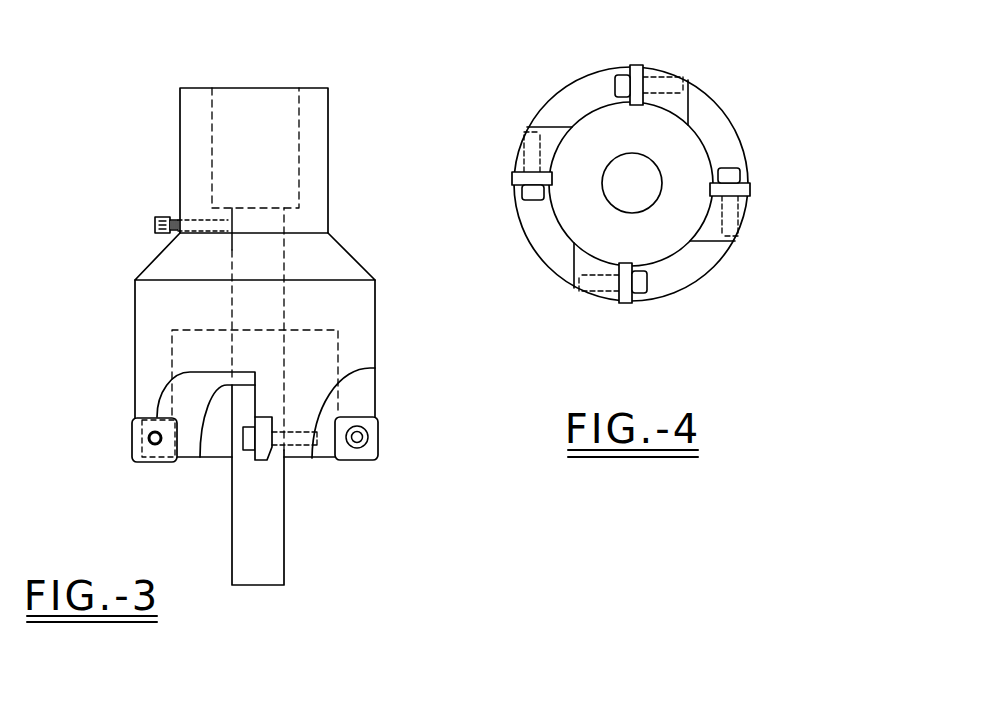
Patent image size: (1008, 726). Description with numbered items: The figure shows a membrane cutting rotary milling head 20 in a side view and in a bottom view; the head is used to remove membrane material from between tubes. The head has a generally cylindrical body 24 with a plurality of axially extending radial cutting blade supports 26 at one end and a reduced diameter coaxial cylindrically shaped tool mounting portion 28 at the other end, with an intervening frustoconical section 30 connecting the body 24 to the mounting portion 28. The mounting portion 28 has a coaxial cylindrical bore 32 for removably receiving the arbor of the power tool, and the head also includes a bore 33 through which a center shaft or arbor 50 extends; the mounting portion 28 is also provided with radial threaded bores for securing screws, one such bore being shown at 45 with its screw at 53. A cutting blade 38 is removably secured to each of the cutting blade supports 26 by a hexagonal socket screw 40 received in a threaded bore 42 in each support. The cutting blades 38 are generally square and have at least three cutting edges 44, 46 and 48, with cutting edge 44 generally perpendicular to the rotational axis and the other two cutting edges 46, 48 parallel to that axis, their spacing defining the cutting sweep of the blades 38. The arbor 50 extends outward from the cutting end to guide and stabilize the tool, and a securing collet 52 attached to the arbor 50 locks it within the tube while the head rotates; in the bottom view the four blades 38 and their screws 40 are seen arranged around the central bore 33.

In FIG. 3, the membrane cutting rotary milling head 20 is at (176, 103).
In FIG. 4, the membrane cutting rotary milling head 20 is at (558, 85).
In FIG. 3, the cylindrical body 24 is at (135, 330).
In FIG. 4, the cylindrical body 24 is at (631, 184).
In FIG. 3, the cutting blade supports 26 is at (370, 397).
In FIG. 4, the cutting blade supports 26 is at (658, 68).
In FIG. 3, the tool mounting portion 28 is at (179, 137).
In FIG. 3, the frustoconical section 30 is at (353, 262).
In FIG. 3, the cylindrical bore 32 is at (213, 108).
In FIG. 3, the bore 33 is at (281, 233).
In FIG. 4, the bore 33 is at (628, 206).
In FIG. 3, the cutting blade 38 is at (133, 423).
In FIG. 4, the cutting blade 38 is at (634, 64).
In FIG. 3, the hexagonal socket screw 40 is at (150, 437).
In FIG. 4, the hexagonal socket screw 40 is at (530, 197).
In FIG. 3, the threaded bore 42 is at (302, 462).
In FIG. 4, the threaded bore 42 is at (672, 70).
In FIG. 3, the cutting edge 44 is at (147, 465).
In FIG. 3, the threaded set screw hole 45 is at (192, 213).
In FIG. 3, the cutting edge 46 is at (323, 443).
In FIG. 3, the cutting edge 48 is at (133, 450).
In FIG. 3, the arbor 50 is at (280, 265).
In FIG. 3, the securing collet 52 is at (338, 332).
In FIG. 3, the set screw 53 is at (157, 221).